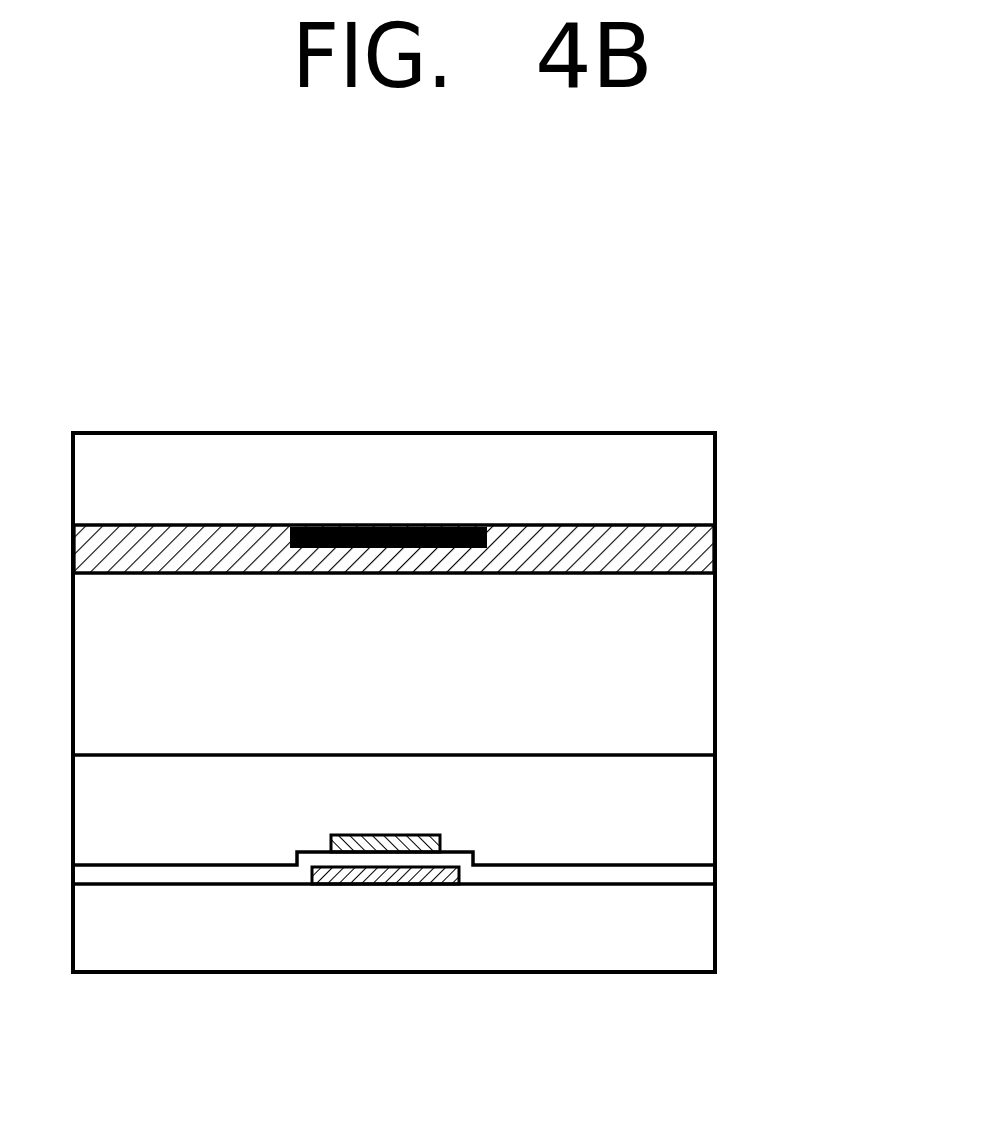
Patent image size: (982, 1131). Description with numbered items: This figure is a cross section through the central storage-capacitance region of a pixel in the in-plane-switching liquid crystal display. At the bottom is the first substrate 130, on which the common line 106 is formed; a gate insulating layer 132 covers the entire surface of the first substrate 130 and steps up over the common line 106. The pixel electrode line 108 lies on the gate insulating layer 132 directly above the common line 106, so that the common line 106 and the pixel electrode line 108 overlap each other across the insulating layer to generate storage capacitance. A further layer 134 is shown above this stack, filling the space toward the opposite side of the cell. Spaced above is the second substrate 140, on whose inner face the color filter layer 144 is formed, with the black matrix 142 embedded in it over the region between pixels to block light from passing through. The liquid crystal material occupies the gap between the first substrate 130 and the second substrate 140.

The common line 106 is at (352, 852).
The pixel electrode line 108 is at (420, 884).
The first substrate 130 is at (695, 942).
The gate insulating layer 132 is at (697, 876).
The planarization layer 134 is at (695, 802).
The second substrate 140 is at (700, 480).
The black matrix 142 is at (392, 525).
The color filter layer 144 is at (700, 538).